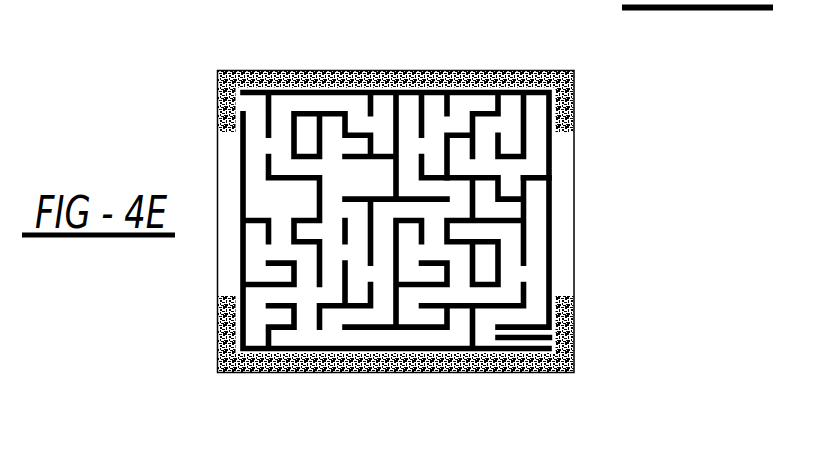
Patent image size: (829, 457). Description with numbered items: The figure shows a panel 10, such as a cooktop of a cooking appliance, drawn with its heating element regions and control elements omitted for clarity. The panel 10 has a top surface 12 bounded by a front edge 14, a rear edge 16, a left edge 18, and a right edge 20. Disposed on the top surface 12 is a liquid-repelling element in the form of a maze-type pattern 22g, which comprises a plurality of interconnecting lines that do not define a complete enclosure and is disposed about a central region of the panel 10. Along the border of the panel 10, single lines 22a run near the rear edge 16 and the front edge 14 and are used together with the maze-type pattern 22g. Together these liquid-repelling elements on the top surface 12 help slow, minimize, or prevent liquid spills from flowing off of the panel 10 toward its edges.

The panel 10 is at (257, 178).
The top surface 12 is at (408, 118).
The front edge 14 is at (483, 369).
The rear edge 16 is at (300, 70).
The left edge 18 is at (220, 306).
The right edge 20 is at (575, 163).
The single lines 22a is at (382, 70).
The maze-type pattern 22g is at (548, 179).